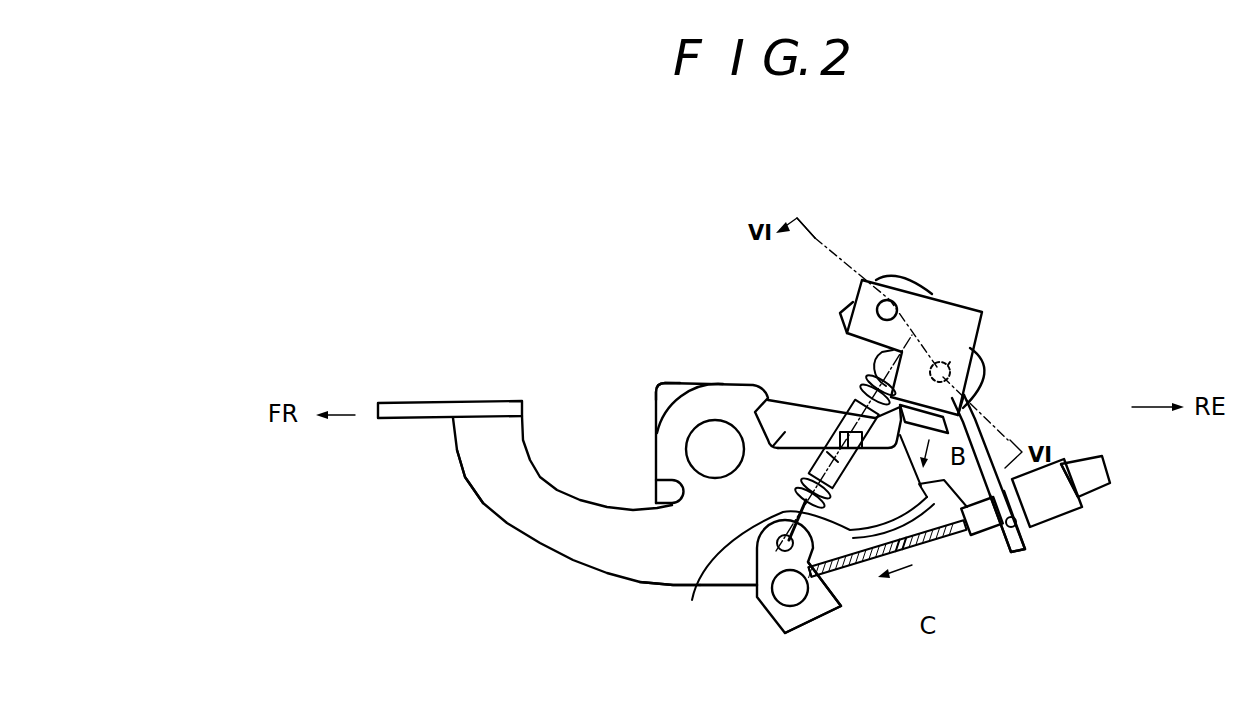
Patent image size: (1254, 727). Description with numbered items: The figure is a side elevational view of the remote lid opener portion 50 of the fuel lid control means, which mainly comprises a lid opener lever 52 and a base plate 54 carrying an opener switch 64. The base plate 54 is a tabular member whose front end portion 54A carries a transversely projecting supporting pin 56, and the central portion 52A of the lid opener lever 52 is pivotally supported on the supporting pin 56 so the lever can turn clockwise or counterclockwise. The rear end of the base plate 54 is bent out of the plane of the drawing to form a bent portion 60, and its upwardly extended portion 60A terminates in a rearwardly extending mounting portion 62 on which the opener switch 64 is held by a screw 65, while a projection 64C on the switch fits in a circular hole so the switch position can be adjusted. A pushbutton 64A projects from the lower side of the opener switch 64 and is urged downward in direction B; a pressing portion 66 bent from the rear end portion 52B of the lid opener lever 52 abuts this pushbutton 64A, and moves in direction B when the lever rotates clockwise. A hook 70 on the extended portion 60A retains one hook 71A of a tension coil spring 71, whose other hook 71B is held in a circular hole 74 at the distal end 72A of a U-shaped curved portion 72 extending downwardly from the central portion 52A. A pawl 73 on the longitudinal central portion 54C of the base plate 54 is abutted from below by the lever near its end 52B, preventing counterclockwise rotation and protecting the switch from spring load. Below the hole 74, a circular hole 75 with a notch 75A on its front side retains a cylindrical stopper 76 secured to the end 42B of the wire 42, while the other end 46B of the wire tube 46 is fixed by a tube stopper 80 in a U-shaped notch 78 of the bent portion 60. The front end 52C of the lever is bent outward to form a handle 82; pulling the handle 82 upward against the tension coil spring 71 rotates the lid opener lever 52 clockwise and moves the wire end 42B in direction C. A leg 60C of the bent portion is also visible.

The wire 42 is at (945, 542).
The end of the wire 42B is at (908, 568).
The wire tube 46 is at (1108, 495).
The other end of the wire tube 46B is at (1087, 493).
The remote lid opener portion 50 is at (741, 238).
The lid opener lever 52 is at (552, 564).
The central portion of the lid opener lever 52A is at (685, 520).
The rear end portion of the lid opener lever 52B is at (827, 452).
The longitudinal front end of the lid opener lever 52C is at (468, 437).
The base plate 54 is at (646, 494).
The front end portion of the base plate 54A is at (655, 386).
The longitudinal central portion of the base plate 54C is at (780, 449).
The supporting pin 56 is at (712, 435).
The bent portion 60 is at (988, 433).
The upwardly extended portion of the bent portion 60A is at (840, 313).
The spring leg 60C is at (1019, 558).
The mounting portion 62 is at (979, 357).
The opener switch 64 is at (947, 318).
The pushbutton 64A is at (953, 403).
The projection 64C is at (950, 363).
The screw 65 is at (890, 300).
The pressing portion 66 is at (972, 415).
The hook 70 is at (948, 361).
The tension coil spring 71 is at (853, 392).
The hook of the tension coil spring 71A is at (875, 360).
The other hook of the tension coil spring 71B is at (698, 603).
The curved portion 72 is at (764, 630).
The distal end of the curved portion 72A is at (756, 562).
The pawl 73 is at (845, 430).
The circular hole 74 is at (803, 543).
The circular hole 75 is at (813, 614).
The notch 75A is at (838, 567).
The cylindrical stopper 76 is at (788, 606).
The U-shaped notch 78 is at (1014, 528).
The tube stopper 80 is at (1053, 457).
The handle 82 is at (440, 402).